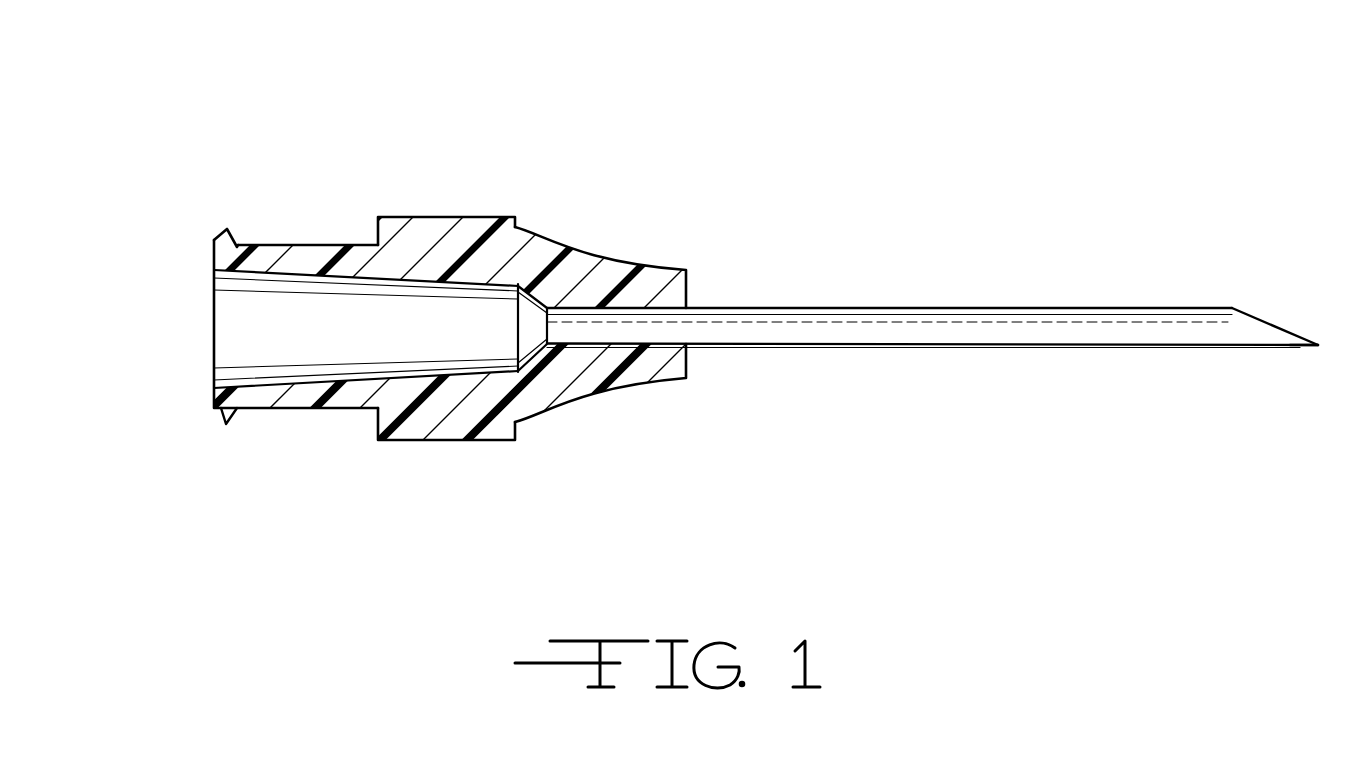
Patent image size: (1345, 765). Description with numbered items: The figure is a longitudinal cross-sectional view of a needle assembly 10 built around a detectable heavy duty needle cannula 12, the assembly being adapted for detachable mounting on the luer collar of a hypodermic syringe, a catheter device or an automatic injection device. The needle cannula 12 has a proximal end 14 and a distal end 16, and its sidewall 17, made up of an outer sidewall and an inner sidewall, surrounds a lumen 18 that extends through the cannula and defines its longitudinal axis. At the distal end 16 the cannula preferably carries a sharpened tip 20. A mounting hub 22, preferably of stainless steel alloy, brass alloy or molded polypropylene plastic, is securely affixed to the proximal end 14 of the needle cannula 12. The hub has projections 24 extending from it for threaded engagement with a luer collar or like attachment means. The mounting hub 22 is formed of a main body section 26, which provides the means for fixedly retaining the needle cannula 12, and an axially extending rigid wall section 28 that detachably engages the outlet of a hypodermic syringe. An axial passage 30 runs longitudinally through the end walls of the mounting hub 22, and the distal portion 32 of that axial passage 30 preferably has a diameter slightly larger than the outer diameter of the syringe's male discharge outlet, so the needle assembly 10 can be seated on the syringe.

The needle assembly 10 is at (737, 135).
The needle cannula 12 is at (898, 346).
The proximal end 14 is at (560, 330).
The distal end 16 is at (1243, 310).
The sidewall 17 is at (922, 310).
The lumen 18 is at (757, 328).
The sharpened tip 20 is at (1318, 347).
The mounting hub 22 is at (565, 218).
The projections 24 is at (228, 424).
The main body section 26 is at (432, 440).
The rigid wall section 28 is at (213, 408).
The axial passage 30 is at (243, 297).
The distal portion 32 is at (237, 352).